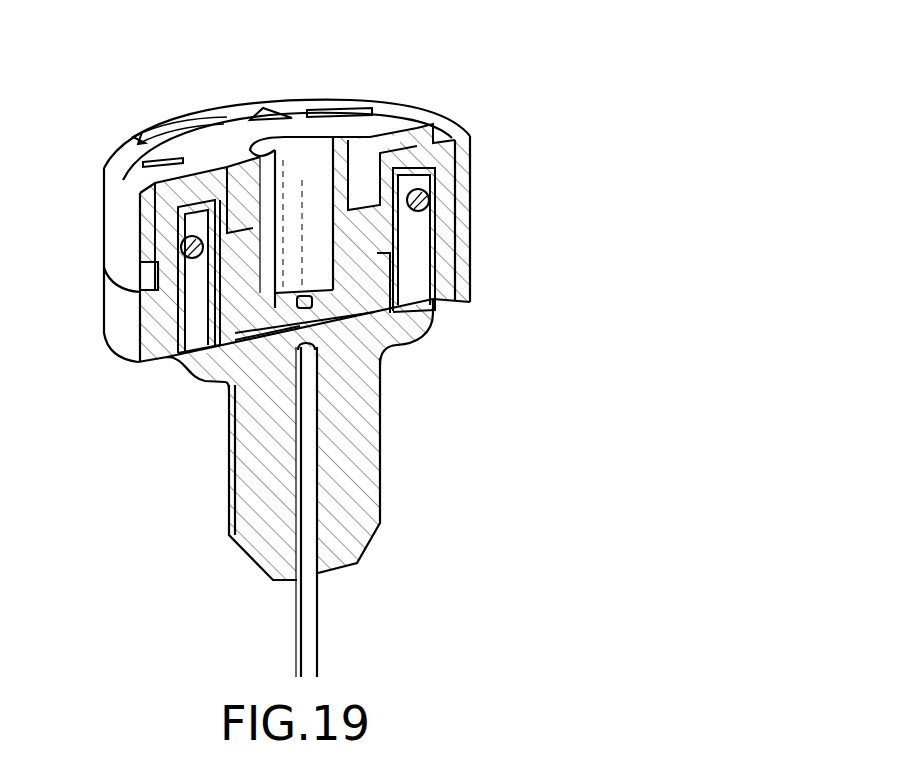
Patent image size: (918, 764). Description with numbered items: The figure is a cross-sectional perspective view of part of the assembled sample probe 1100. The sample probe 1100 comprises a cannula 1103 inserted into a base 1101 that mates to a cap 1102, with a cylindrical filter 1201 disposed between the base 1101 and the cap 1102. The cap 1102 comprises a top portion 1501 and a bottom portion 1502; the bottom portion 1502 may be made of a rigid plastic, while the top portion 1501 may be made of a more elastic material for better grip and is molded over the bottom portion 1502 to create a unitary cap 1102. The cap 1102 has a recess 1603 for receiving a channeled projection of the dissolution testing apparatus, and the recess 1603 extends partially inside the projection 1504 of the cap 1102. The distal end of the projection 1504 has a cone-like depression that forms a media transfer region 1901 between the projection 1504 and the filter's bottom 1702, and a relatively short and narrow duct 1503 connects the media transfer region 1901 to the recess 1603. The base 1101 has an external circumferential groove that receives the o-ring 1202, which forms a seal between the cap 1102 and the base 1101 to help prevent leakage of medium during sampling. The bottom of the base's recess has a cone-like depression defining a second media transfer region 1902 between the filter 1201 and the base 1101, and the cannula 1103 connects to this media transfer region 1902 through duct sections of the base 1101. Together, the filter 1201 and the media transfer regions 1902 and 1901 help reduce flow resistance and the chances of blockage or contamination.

The sample probe 1100 is at (125, 80).
The base 1101 is at (370, 500).
The cap 1102 is at (614, 122).
The cannula 1103 is at (310, 617).
The cylindrical filter 1201 is at (405, 310).
The o-ring 1202 is at (430, 206).
The top portion 1501 is at (447, 124).
The bottom portion 1502 is at (447, 178).
The duct 1503 is at (312, 294).
The projection 1504 is at (278, 307).
The recess 1603 is at (304, 150).
The bottom 1702 is at (322, 323).
The media transfer region 1901 is at (322, 316).
The media transfer region 1902 is at (300, 315).